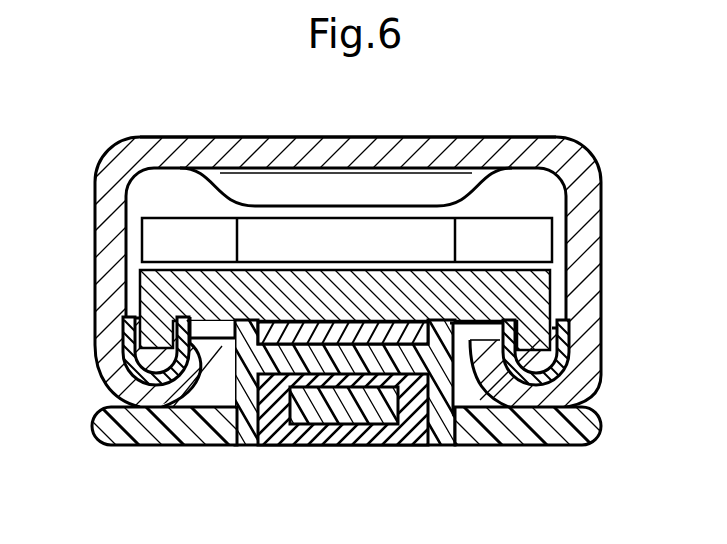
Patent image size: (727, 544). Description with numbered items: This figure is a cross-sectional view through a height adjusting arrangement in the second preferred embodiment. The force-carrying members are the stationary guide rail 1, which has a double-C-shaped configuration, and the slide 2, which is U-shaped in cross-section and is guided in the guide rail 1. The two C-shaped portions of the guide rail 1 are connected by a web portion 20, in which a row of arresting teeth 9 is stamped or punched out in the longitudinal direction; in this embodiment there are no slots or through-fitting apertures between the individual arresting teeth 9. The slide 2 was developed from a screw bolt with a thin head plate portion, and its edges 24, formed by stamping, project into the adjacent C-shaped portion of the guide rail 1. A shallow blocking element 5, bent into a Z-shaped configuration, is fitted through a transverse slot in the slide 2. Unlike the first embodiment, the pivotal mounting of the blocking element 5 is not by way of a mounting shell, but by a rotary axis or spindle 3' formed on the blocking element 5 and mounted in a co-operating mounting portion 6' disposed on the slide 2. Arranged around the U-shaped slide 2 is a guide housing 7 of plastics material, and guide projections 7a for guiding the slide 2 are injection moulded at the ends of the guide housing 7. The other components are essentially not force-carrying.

The guide rail 1 is at (548, 162).
The web portion 20 is at (233, 153).
The arresting teeth 9 is at (299, 185).
The blocking element 5 is at (407, 235).
The slide 2 is at (545, 283).
The edges 24 is at (533, 341).
The guide housing 7 is at (437, 445).
The guide projections 7a is at (150, 368).
The co-operating mounting portion 6' is at (290, 408).
The rotary axis or spindle 3' is at (495, 411).